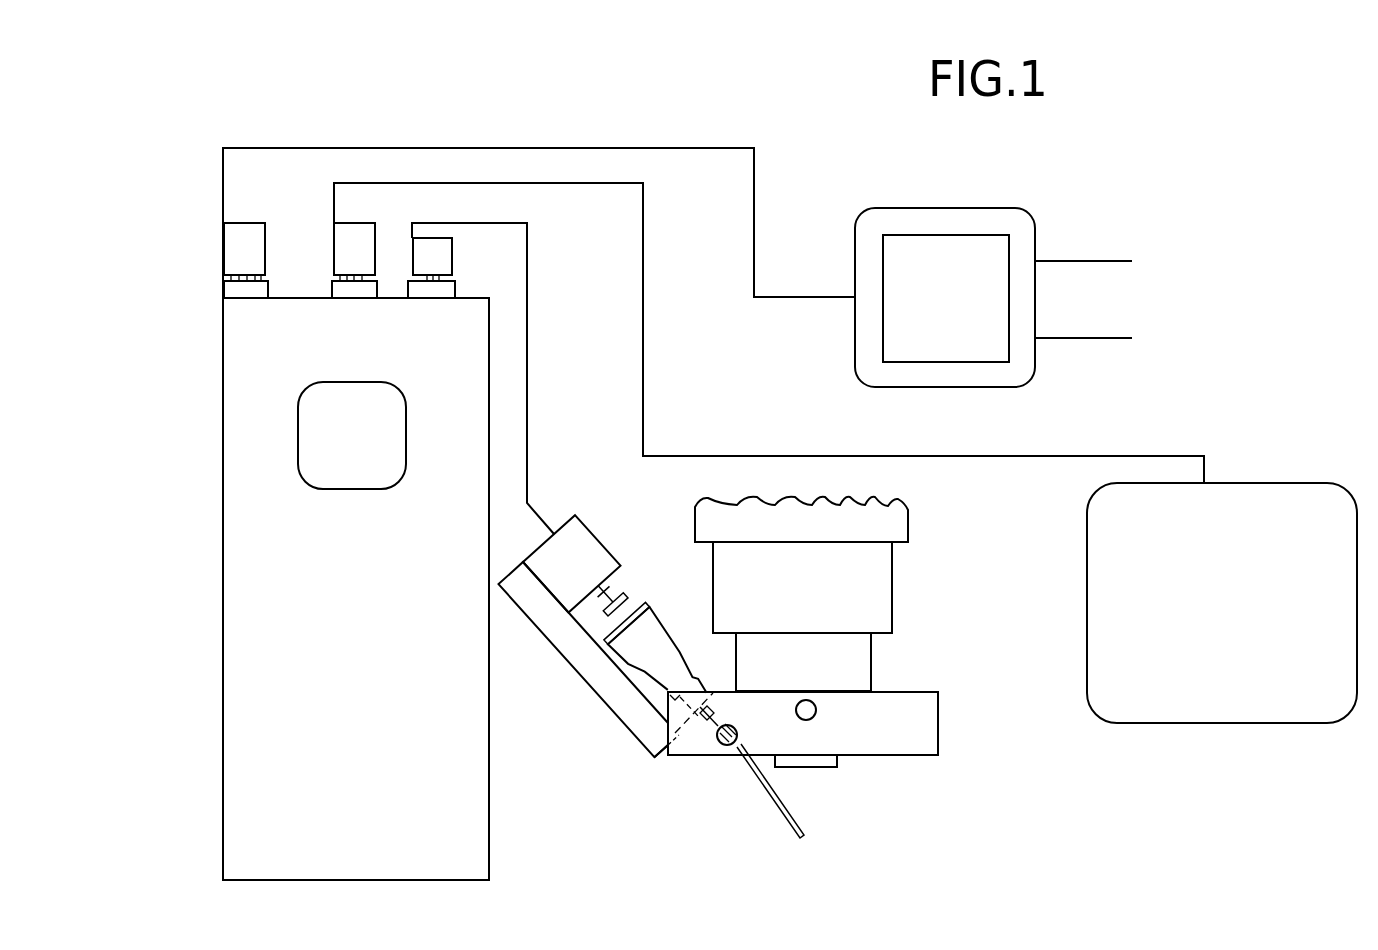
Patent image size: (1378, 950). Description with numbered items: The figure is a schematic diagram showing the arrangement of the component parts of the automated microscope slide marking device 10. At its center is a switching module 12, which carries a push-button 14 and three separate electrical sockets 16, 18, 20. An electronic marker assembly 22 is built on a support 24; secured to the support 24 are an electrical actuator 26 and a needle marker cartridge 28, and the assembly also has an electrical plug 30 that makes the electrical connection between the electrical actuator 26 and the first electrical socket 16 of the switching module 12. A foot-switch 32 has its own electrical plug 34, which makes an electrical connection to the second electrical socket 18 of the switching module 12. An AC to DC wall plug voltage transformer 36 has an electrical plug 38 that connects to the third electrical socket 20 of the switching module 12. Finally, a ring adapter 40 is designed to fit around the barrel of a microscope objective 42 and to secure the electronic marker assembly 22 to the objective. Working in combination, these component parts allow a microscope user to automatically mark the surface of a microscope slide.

The automated microscope slide marking device 10 is at (1060, 768).
The switching module 12 is at (207, 693).
The push-button 14 is at (317, 443).
The first electrical socket 16 is at (450, 287).
The second electrical socket 18 is at (343, 292).
The third electrical socket 20 is at (233, 288).
The electronic marker assembly 22 is at (546, 652).
The support 24 is at (635, 715).
The electrical actuator 26 is at (583, 545).
The needle marker cartridge 28 is at (658, 632).
The electrical plug 30 is at (428, 255).
The foot-switch 32 is at (1286, 723).
The electrical plug 34 is at (347, 232).
The AC to DC wall plug voltage transformer 36 is at (964, 208).
The electrical plug 38 is at (237, 238).
The ring adapter 40 is at (925, 722).
The microscope objective 42 is at (862, 658).